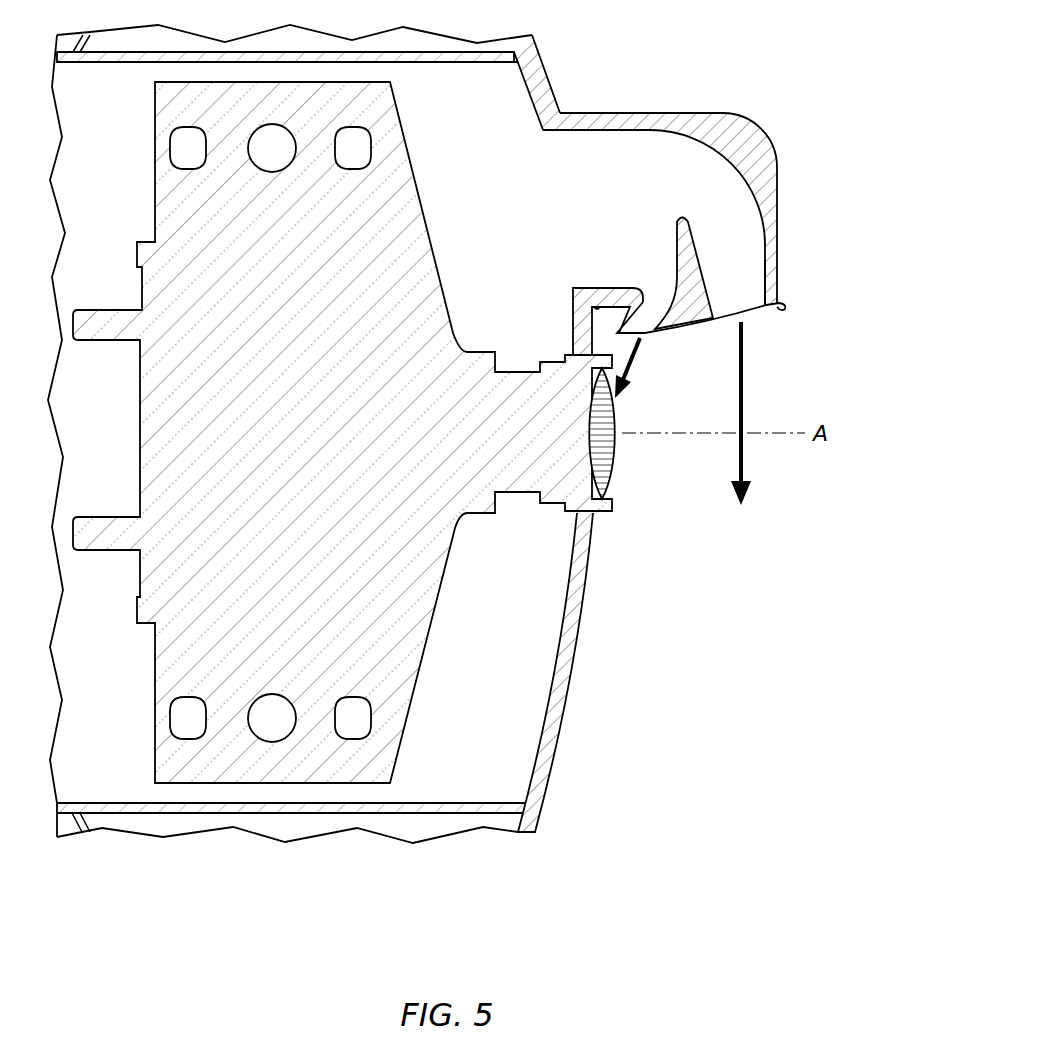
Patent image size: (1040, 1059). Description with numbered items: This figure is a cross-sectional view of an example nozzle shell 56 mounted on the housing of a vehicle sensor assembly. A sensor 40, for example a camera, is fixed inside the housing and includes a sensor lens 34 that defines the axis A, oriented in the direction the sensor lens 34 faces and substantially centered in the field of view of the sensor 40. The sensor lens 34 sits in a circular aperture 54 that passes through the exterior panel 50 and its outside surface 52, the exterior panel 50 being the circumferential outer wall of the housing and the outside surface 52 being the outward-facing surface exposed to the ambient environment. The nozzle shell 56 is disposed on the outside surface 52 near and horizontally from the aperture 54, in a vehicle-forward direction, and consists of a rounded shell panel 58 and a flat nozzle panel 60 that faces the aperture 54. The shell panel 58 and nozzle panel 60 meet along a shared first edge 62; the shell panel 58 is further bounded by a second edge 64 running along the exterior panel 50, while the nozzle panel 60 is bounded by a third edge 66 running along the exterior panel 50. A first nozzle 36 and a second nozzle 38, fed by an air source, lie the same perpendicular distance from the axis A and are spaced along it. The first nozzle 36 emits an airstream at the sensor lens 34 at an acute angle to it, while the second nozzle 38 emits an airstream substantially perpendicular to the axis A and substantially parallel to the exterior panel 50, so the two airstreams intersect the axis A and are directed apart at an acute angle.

The sensor lens 34 is at (614, 468).
The first nozzle 36 is at (645, 334).
The second nozzle 38 is at (757, 312).
The sensor 40 is at (528, 497).
The exterior panel 50 is at (550, 692).
The outside surface 52 is at (578, 650).
The aperture 54 is at (573, 325).
The nozzle shell 56 is at (680, 115).
The shell panel 58 is at (778, 202).
The nozzle panel 60 is at (693, 326).
The first edge 62 is at (786, 308).
The second edge 64 is at (560, 113).
The third edge 66 is at (606, 305).